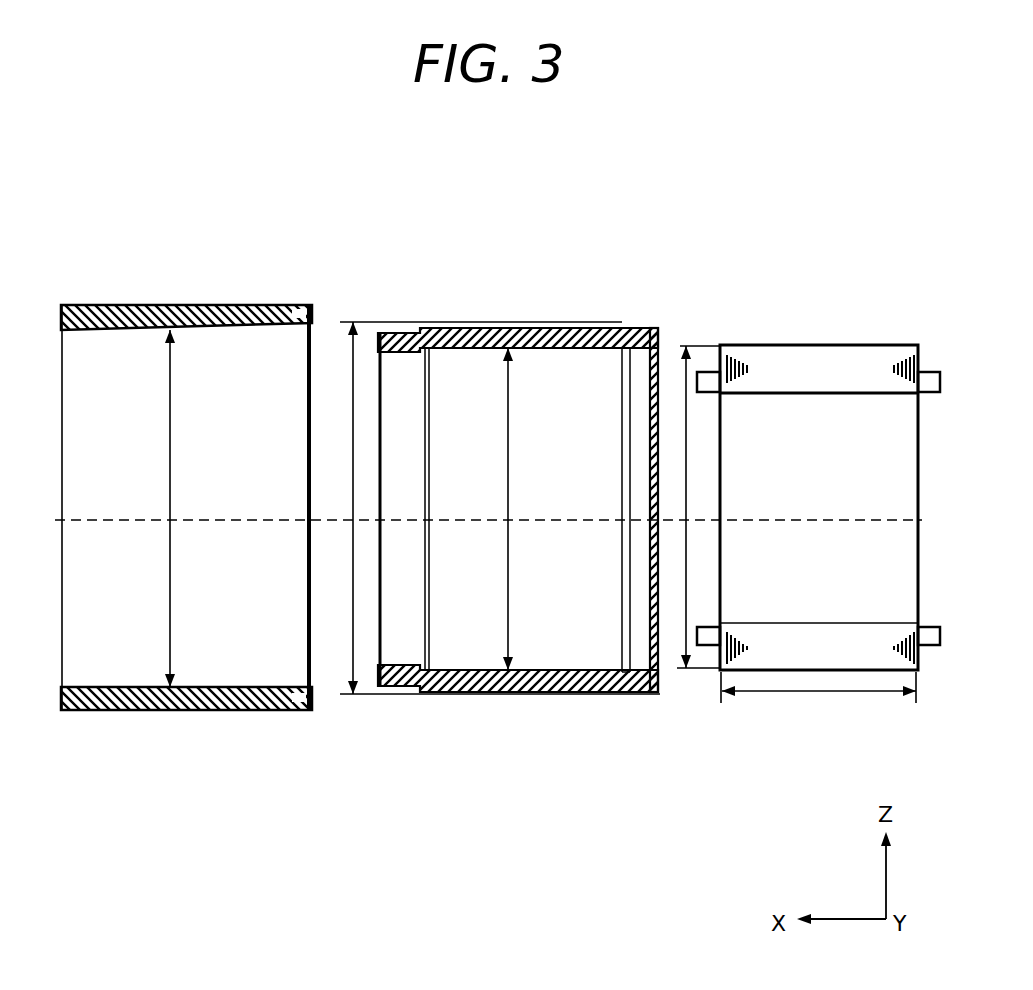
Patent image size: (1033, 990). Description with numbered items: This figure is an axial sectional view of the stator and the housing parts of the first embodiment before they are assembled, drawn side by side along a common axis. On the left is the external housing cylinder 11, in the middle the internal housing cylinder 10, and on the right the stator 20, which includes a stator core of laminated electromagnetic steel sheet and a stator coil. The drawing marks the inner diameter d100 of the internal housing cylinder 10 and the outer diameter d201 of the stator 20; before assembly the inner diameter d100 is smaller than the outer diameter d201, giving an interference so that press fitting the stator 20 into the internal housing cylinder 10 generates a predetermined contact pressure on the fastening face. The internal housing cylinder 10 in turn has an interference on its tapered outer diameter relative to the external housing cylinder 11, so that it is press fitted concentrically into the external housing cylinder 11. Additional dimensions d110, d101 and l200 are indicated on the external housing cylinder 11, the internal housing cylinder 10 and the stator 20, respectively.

The internal housing cylinder 10 is at (535, 328).
The external housing cylinder 11 is at (208, 305).
The stator 20 is at (810, 370).
The inner diameter of case d110 is at (162, 595).
The outer diameter of capacitor element d101 is at (352, 628).
The inner diameter of internal housing cylinder d100 is at (498, 660).
The outer diameter of stator d201 is at (670, 655).
The length of electronic component l200 is at (845, 688).